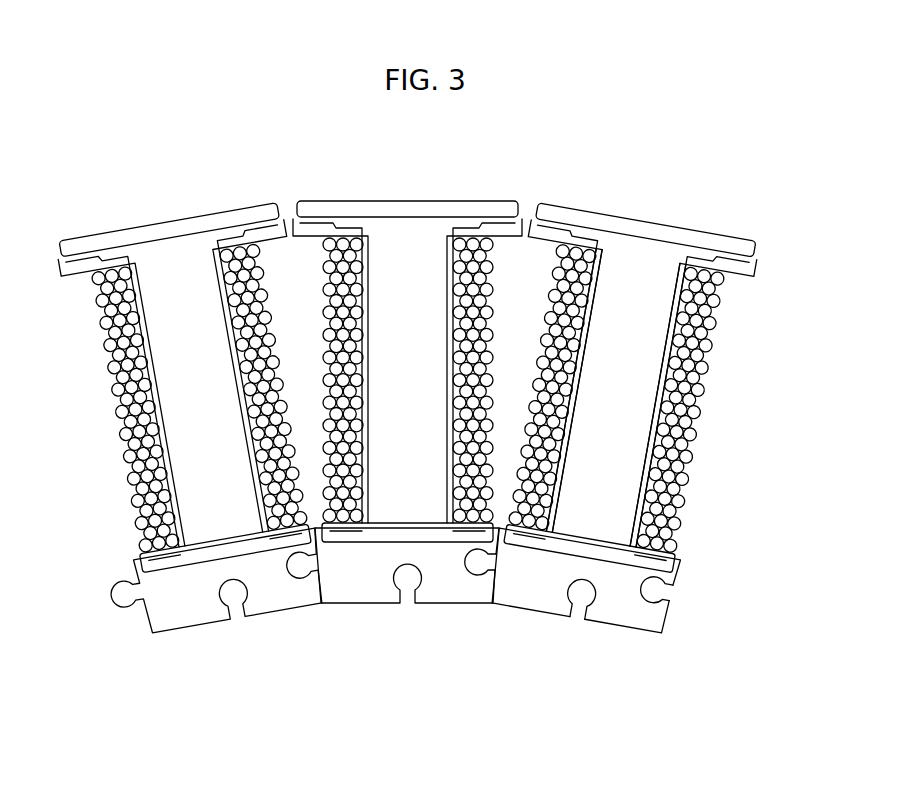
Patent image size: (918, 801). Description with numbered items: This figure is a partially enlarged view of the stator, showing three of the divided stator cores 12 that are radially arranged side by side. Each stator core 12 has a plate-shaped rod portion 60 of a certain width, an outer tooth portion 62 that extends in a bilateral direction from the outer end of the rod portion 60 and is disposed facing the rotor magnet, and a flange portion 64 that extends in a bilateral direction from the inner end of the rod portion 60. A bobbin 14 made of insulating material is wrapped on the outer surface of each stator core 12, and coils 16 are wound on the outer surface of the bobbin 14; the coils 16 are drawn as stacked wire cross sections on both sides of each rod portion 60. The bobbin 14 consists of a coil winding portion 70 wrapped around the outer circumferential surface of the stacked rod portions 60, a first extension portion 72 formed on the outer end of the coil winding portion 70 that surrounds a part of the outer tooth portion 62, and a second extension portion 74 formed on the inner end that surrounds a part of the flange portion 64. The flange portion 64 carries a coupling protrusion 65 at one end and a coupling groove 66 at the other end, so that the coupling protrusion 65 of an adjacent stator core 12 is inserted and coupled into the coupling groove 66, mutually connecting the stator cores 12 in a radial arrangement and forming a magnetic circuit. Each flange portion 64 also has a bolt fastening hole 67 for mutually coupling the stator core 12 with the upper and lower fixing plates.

The stator core 12 is at (646, 498).
The bobbin 14 is at (662, 467).
The coils 16 is at (710, 332).
The rod portion 60 is at (613, 422).
The outer tooth portion 62 is at (658, 228).
The flange portion 64 is at (627, 603).
The coupling protrusion 65 is at (480, 565).
The coupling groove 66 is at (670, 603).
The bolt fastening hole 67 is at (583, 600).
The coil winding portion 70 is at (675, 373).
The first extension portion 72 is at (740, 281).
The second extension portion 74 is at (677, 563).